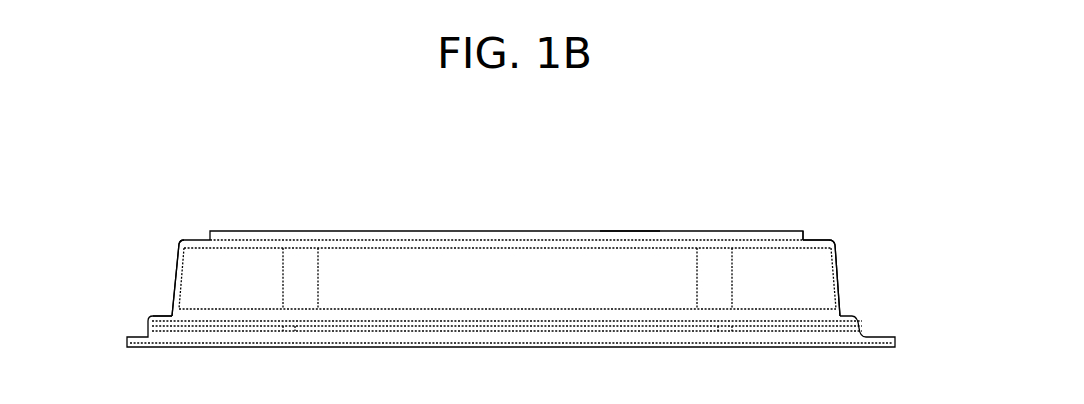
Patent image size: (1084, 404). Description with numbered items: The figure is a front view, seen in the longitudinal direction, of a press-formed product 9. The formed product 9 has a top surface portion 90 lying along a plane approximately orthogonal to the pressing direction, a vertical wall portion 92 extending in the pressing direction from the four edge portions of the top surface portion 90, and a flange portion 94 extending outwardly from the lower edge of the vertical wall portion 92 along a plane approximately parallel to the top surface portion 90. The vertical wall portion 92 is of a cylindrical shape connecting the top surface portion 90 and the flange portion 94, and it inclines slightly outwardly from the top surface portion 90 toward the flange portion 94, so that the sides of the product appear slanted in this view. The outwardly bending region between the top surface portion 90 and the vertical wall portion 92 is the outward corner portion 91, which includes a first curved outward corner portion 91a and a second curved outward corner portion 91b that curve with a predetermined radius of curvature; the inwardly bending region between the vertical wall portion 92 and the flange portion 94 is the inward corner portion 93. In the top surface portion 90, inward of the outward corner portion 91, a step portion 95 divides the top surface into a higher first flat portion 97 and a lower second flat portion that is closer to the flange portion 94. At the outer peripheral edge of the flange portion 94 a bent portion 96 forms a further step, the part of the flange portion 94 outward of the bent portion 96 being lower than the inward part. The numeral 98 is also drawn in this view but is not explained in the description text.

The formed product 9 is at (130, 174).
The top surface portion 90 is at (558, 217).
The outward corner portion 91 is at (410, 228).
The first curved outward corner portion 91a is at (182, 238).
The second curved outward corner portion 91b is at (295, 243).
The vertical wall portion 92 is at (468, 272).
The inward corner portion 93 is at (349, 299).
The flange portion 94 is at (148, 297).
The step portion 95 is at (803, 231).
The bent portion 96 is at (147, 316).
The first flat portion 97 is at (625, 231).
The rim portion 98 is at (817, 240).